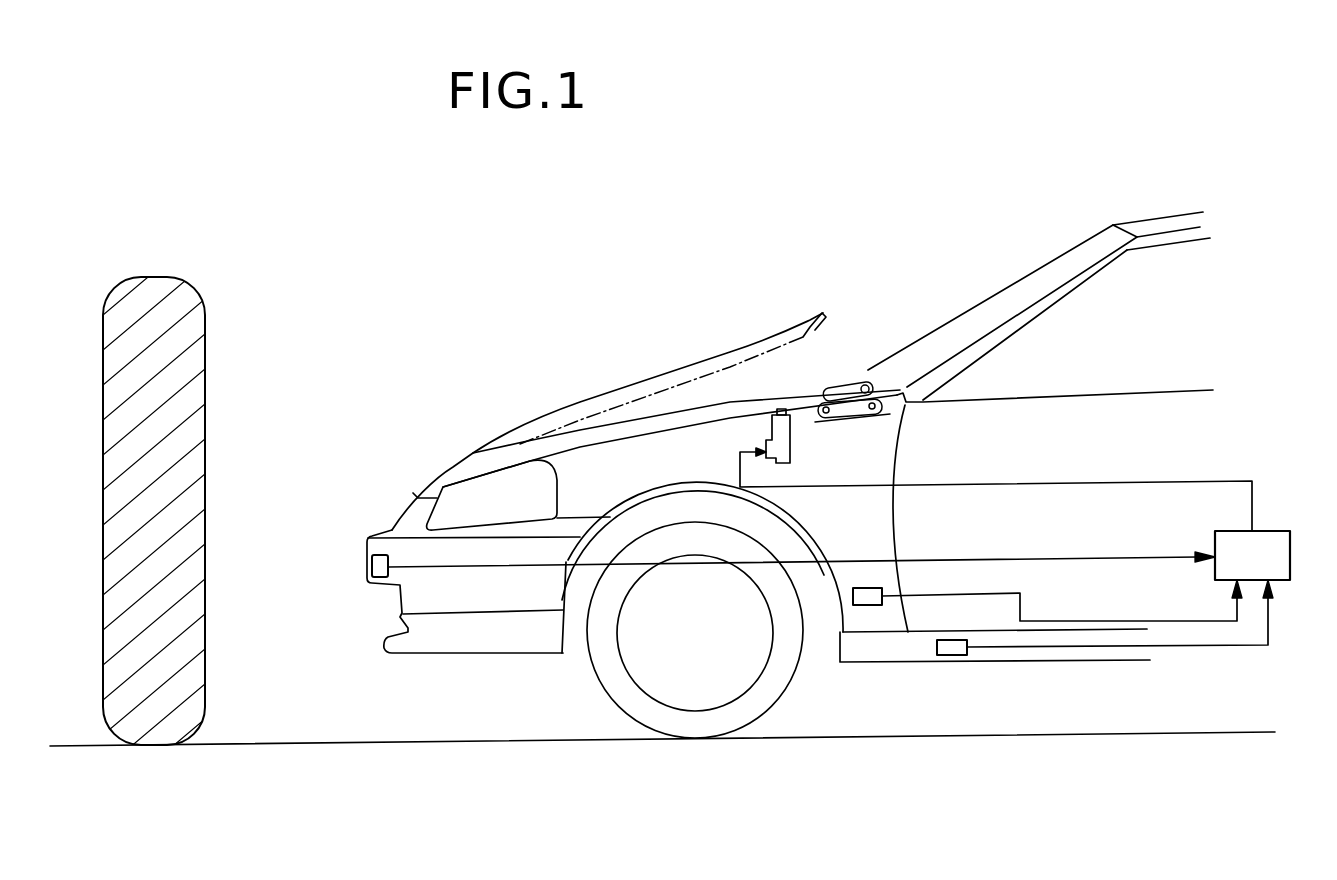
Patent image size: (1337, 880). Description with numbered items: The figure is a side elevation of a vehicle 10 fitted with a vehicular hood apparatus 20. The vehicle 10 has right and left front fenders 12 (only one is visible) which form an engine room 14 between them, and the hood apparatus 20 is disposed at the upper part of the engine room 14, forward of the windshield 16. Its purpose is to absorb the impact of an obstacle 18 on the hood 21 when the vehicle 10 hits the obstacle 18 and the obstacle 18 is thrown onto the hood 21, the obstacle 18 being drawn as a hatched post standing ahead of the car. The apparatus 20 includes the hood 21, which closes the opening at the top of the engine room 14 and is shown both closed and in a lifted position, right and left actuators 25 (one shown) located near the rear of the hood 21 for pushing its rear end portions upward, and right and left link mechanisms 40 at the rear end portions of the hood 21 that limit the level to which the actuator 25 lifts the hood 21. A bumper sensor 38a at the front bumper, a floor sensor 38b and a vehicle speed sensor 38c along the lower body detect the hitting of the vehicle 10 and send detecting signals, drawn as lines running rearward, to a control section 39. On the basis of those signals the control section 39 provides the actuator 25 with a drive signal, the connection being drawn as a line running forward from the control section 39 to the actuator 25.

The vehicle 10 is at (1158, 183).
The front fender 12 is at (613, 455).
The engine room 14 is at (688, 447).
The windshield 16 is at (983, 297).
The obstacle 18 is at (158, 277).
The vehicular hood apparatus 20 is at (850, 175).
The hood 21 is at (500, 445).
The actuator 25 is at (785, 383).
The bumper sensor 38a is at (380, 583).
The floor sensor 38b is at (952, 655).
The vehicle speed sensor 38c is at (862, 605).
The control section 39 is at (1290, 557).
The link mechanism 40 is at (857, 358).